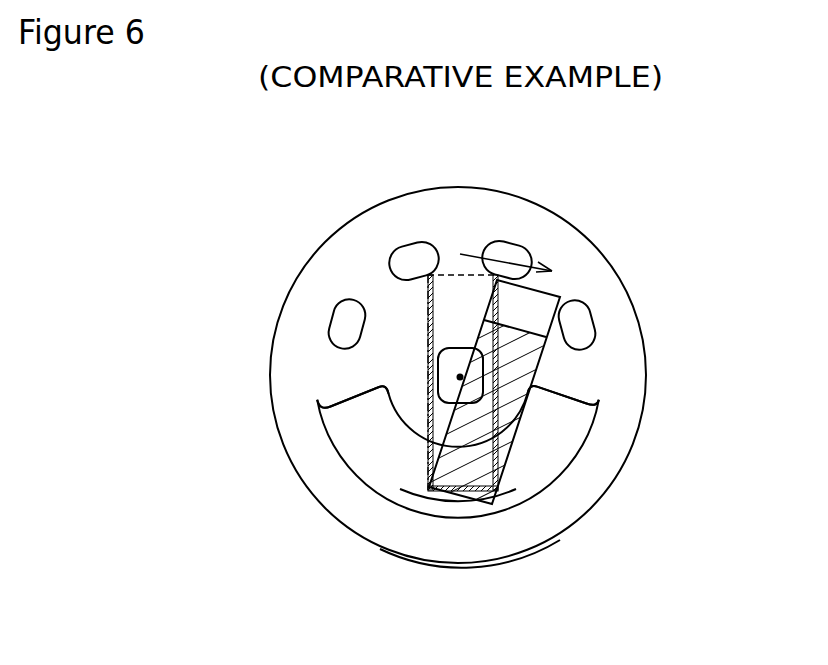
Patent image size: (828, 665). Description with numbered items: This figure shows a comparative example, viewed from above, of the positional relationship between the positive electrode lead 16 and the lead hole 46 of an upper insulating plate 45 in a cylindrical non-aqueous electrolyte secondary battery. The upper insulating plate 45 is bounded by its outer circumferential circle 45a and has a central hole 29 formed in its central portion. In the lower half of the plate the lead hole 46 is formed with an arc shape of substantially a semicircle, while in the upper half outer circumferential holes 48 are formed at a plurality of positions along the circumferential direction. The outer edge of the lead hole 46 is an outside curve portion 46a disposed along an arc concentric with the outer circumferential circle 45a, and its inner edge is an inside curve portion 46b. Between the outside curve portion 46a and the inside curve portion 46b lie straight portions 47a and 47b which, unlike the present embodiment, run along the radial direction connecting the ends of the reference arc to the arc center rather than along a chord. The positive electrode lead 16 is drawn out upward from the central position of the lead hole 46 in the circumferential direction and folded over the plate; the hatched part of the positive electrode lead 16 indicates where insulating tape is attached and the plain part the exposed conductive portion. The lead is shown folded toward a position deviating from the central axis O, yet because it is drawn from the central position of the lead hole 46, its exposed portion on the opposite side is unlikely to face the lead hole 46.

The positive electrode lead 16 is at (377, 440).
The central hole 29 is at (456, 348).
The upper insulating plate 45 is at (612, 255).
The outer circumferential circle 45a is at (390, 553).
The lead hole 46 is at (560, 437).
The outside curve portion 46a is at (463, 519).
The inside curve portion 46b is at (398, 414).
The straight portion 47a is at (347, 387).
The straight portion 47b is at (562, 390).
The outer circumferential holes 48 is at (407, 256).
The central axis O is at (440, 360).